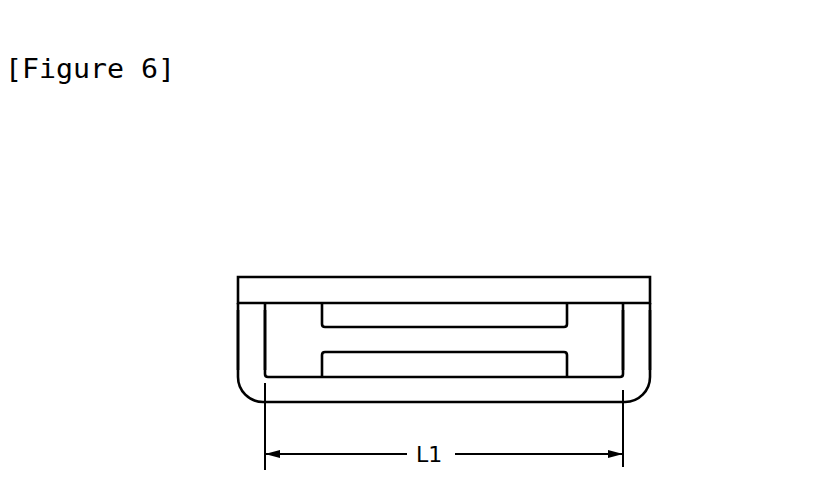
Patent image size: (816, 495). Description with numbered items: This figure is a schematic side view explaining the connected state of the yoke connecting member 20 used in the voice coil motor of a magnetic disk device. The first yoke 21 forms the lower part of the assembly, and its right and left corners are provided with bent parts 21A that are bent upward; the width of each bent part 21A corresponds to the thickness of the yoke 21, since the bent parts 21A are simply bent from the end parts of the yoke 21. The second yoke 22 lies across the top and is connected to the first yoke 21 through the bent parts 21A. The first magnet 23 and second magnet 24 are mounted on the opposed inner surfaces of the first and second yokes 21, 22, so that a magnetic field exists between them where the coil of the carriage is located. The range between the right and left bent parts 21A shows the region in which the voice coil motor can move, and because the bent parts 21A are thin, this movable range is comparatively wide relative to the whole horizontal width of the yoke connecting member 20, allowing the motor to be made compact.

The yoke connecting member 20 is at (656, 266).
The first yoke 21 is at (642, 388).
The bent parts 21A is at (245, 336).
The second yoke 22 is at (488, 277).
The first magnet 23 is at (377, 367).
The second magnet 24 is at (417, 311).